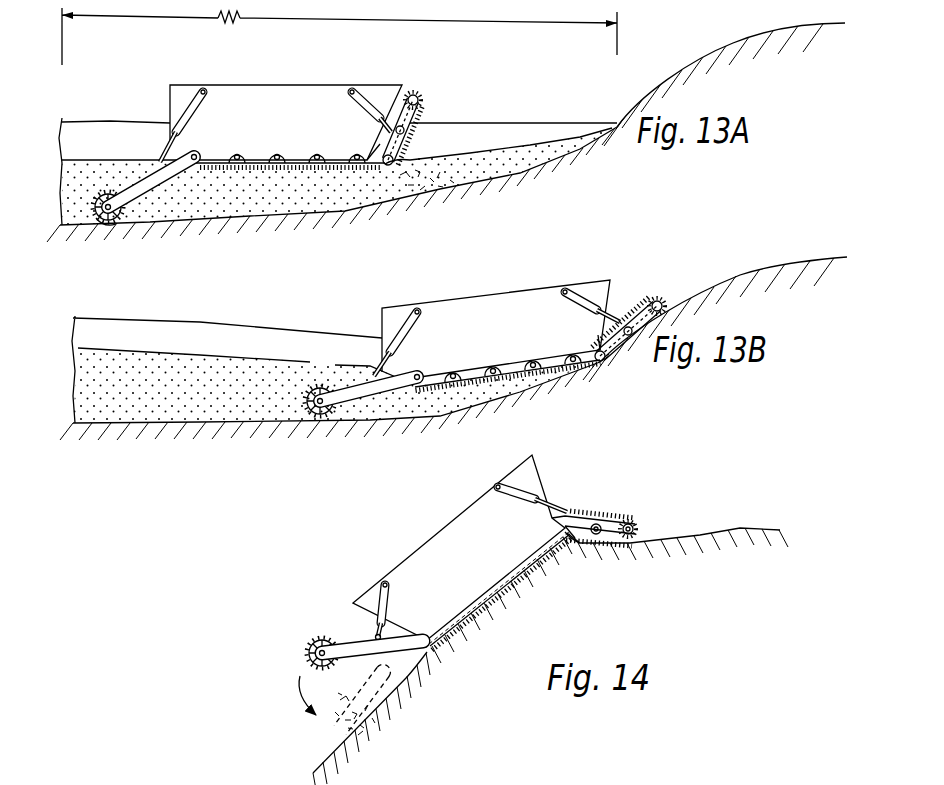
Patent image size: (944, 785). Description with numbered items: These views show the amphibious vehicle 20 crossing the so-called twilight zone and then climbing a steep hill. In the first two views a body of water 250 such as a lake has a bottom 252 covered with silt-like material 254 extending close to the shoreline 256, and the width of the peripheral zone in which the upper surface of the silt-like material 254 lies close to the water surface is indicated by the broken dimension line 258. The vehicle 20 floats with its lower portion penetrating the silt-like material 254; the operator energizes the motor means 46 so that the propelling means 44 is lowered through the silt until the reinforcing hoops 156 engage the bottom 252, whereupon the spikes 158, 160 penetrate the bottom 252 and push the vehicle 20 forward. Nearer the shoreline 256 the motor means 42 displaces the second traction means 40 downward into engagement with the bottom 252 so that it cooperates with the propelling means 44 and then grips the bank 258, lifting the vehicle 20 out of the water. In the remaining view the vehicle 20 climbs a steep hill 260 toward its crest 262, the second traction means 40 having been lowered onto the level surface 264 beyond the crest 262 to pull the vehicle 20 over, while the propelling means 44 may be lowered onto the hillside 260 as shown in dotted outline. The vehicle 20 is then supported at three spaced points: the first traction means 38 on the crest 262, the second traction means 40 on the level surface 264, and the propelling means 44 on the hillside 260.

In FIG. 13A, the amphibious vehicle 20 is at (287, 81).
In FIG. 13B, the amphibious vehicle 20 is at (488, 287).
In FIG. 14, the amphibious vehicle 20 is at (439, 529).
In FIG. 13A, the first traction means 38 is at (288, 157).
In FIG. 13B, the first traction means 38 is at (508, 373).
In FIG. 14, the first traction means 38 is at (507, 595).
In FIG. 13A, the second traction means 40 is at (426, 91).
In FIG. 13B, the second traction means 40 is at (650, 300).
In FIG. 14, the second traction means 40 is at (629, 517).
In FIG. 13A, the motor means 42 is at (360, 108).
In FIG. 13B, the motor means 42 is at (574, 306).
In FIG. 14, the motor means 42 is at (523, 503).
In FIG. 13A, the propelling means 44 is at (112, 188).
In FIG. 13B, the propelling means 44 is at (317, 375).
In FIG. 14, the propelling means 44 is at (323, 633).
In FIG. 13A, the motor means 46 is at (193, 117).
In FIG. 13B, the motor means 46 is at (408, 325).
In FIG. 14, the motor means 46 is at (387, 600).
In FIG. 13A, the reinforcing hoops 156 is at (100, 226).
In FIG. 13A, the spikes 158 is at (130, 208).
In FIG. 13B, the spikes 158 is at (369, 389).
In FIG. 14, the spikes 158 is at (372, 648).
In FIG. 13A, the spikes 160 is at (122, 222).
In FIG. 13A, the body of water 250 is at (90, 128).
In FIG. 13B, the body of water 250 is at (100, 328).
In FIG. 13A, the bottom 252 is at (237, 213).
In FIG. 13B, the bottom 252 is at (197, 420).
In FIG. 13A, the silt-like material 254 is at (194, 204).
In FIG. 13B, the silt-like material 254 is at (170, 380).
In FIG. 13A, the shoreline 256 is at (618, 127).
In FIG. 13A, the broken dimension line 258 is at (308, 17).
In FIG. 13B, the broken dimension line 258 is at (723, 283).
In FIG. 14, the hill 260 is at (331, 752).
In FIG. 14, the crest 262 is at (568, 543).
In FIG. 14, the level surface 264 is at (669, 538).